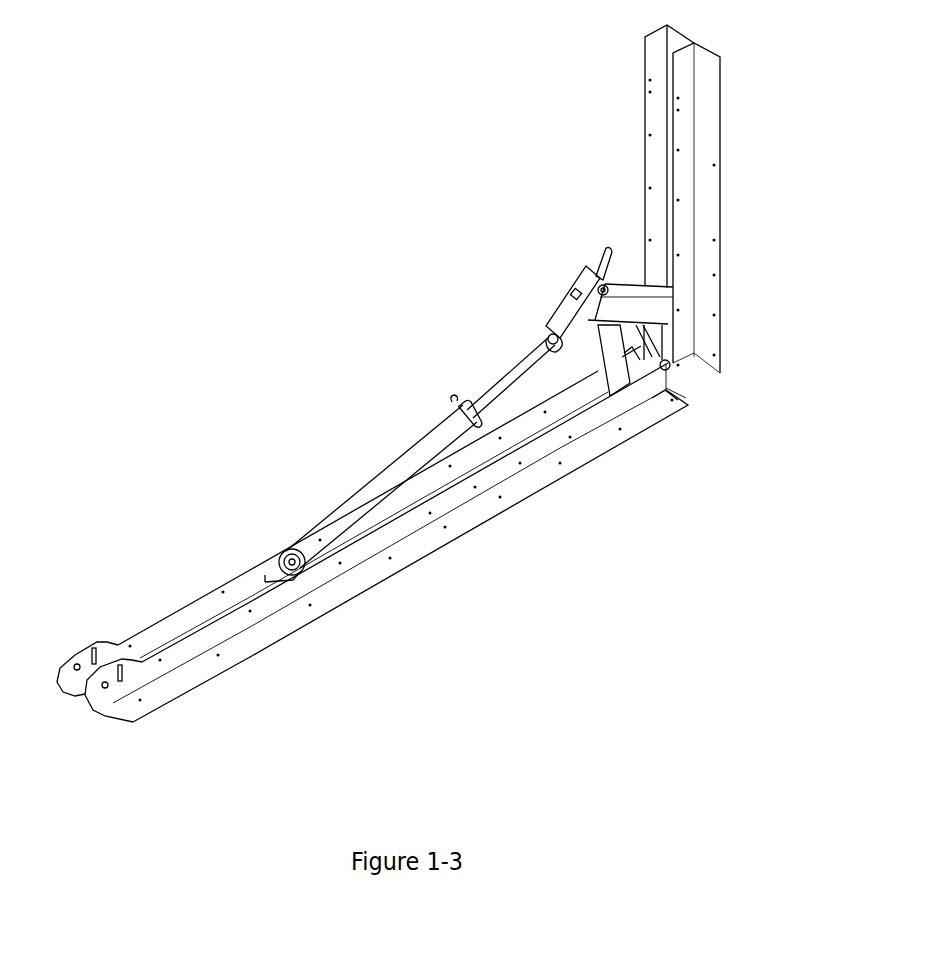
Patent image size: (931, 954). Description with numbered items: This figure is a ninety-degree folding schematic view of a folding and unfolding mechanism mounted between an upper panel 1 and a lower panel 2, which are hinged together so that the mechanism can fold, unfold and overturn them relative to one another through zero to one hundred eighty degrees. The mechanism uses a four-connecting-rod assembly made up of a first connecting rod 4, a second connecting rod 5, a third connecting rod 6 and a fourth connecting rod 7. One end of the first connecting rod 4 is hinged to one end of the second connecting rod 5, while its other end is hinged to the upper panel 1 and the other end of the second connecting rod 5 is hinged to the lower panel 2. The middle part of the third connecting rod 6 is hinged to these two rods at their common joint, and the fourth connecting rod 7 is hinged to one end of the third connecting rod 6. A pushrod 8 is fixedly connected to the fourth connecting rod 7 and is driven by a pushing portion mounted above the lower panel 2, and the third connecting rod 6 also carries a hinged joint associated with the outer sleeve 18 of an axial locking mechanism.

The upper panel 1 is at (702, 165).
The lower panel 2 is at (534, 486).
The first connecting rod 4 is at (605, 290).
The second connecting rod 5 is at (608, 353).
The third connecting rod 6 is at (617, 307).
The fourth connecting rod 7 is at (568, 342).
The pushrod 8 is at (397, 477).
The outer sleeve 18 is at (570, 307).